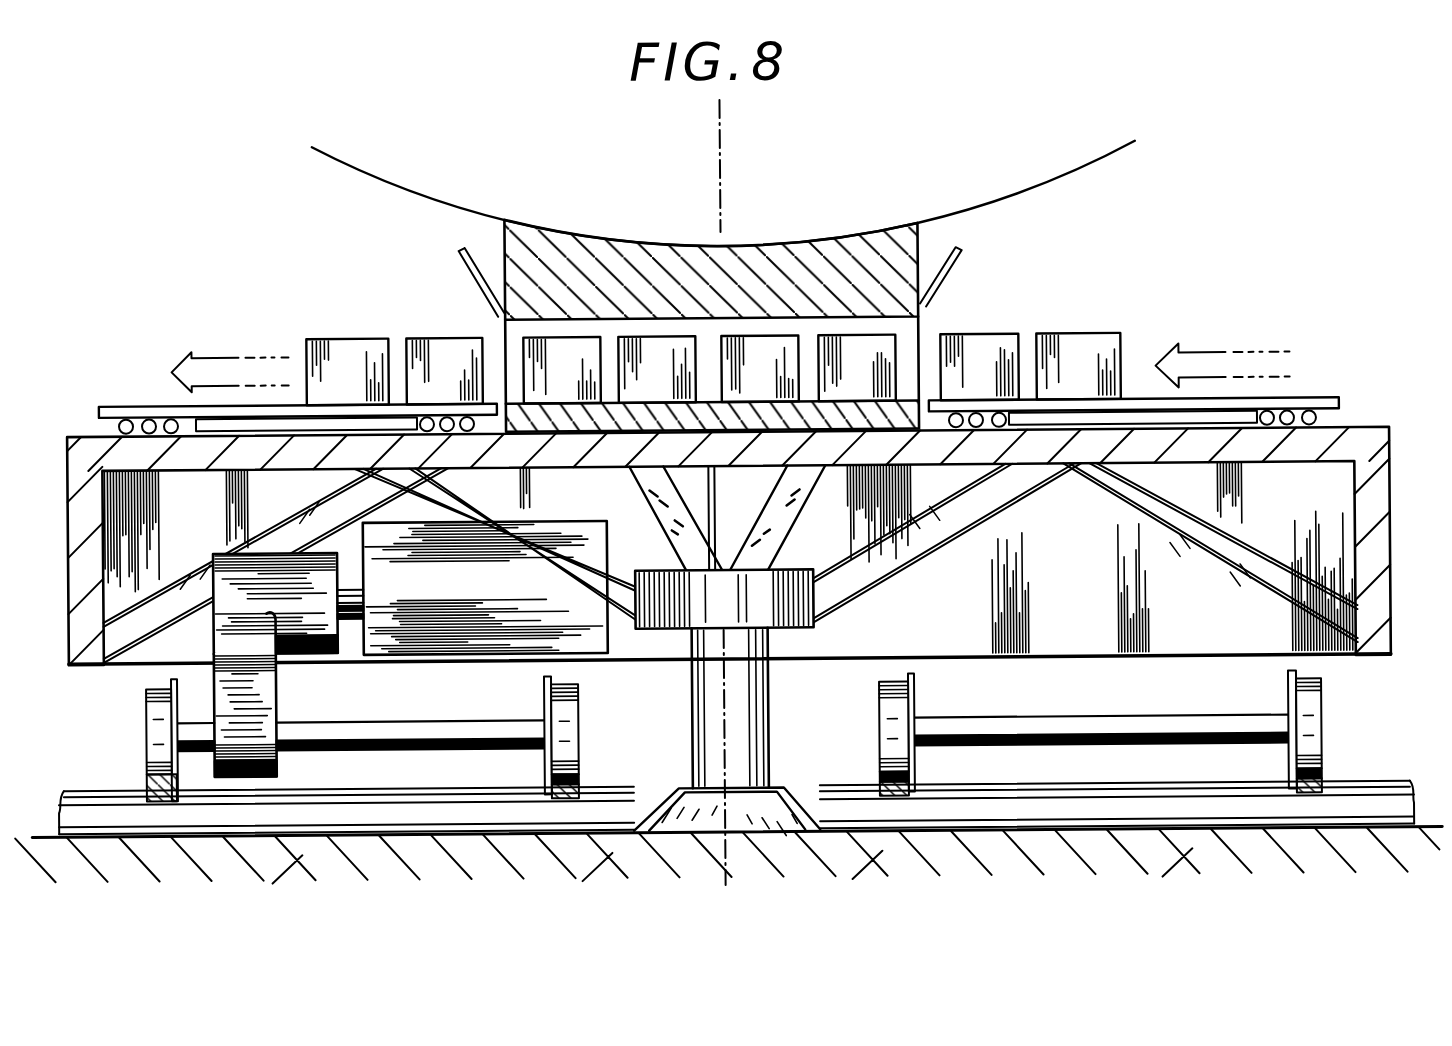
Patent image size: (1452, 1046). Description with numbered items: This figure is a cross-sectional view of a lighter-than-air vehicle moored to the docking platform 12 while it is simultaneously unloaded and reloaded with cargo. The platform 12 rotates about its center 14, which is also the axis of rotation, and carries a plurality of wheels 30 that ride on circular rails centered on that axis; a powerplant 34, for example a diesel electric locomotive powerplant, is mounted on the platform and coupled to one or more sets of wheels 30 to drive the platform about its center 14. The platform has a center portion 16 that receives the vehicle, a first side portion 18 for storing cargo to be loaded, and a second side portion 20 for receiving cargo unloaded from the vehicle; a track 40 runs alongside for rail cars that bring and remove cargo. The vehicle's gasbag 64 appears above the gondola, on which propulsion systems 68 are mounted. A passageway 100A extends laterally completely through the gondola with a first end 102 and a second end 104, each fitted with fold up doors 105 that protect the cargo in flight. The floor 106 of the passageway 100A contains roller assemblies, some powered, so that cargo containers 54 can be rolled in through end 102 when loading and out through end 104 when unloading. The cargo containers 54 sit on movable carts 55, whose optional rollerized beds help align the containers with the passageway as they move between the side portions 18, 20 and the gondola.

The platform 12 is at (1358, 661).
The center 14 is at (723, 768).
The center portion 16 is at (745, 423).
The first side portion 18 is at (1230, 432).
The second side portion 20 is at (193, 432).
The wheels 30 is at (145, 743).
The powerplant 34 is at (478, 594).
The track 40 is at (588, 792).
The cargo containers 54 is at (333, 391).
The carts 55 is at (123, 403).
The gasbag 64 is at (377, 180).
The propulsion systems 68 is at (923, 240).
The passageway 100A is at (707, 313).
The first end 102 is at (907, 357).
The second end 104 is at (513, 357).
The fold up doors 105 is at (462, 250).
The floor 106 is at (640, 399).